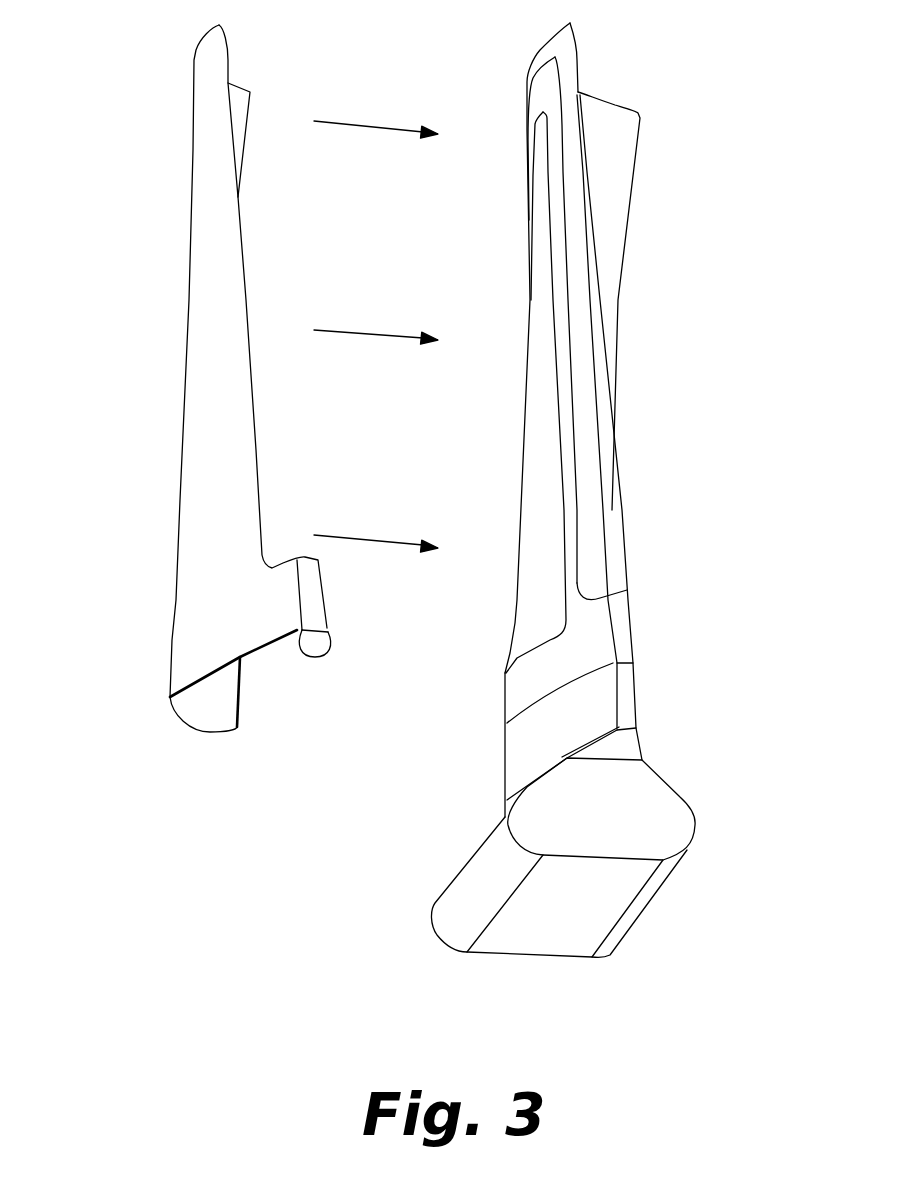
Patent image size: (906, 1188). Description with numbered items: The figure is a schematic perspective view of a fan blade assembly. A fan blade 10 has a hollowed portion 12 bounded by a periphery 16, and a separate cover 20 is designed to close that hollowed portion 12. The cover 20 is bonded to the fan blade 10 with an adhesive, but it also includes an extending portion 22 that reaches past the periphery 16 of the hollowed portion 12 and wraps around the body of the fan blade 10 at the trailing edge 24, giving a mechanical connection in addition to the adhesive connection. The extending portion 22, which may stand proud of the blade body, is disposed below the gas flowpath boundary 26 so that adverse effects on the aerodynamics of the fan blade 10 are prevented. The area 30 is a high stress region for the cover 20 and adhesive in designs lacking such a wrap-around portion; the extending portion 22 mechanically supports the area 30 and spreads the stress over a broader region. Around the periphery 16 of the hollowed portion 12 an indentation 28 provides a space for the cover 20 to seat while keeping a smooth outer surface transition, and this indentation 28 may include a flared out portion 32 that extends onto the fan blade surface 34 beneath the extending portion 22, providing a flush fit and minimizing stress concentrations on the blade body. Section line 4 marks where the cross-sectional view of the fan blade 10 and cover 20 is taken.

The section line 4- 4 is at (71, 647).
The fan blade 10 is at (637, 154).
The hollowed portion 12 is at (536, 417).
The periphery 16 is at (517, 696).
The cover 20 is at (193, 145).
The extending portion 22 is at (330, 648).
The trailing edge 24 is at (640, 703).
The gas flowpath boundary 26 is at (735, 355).
The indentation 28 is at (573, 590).
The area 30 is at (535, 562).
The flared out portion 32 is at (611, 636).
The fan blade surface 34 is at (520, 752).